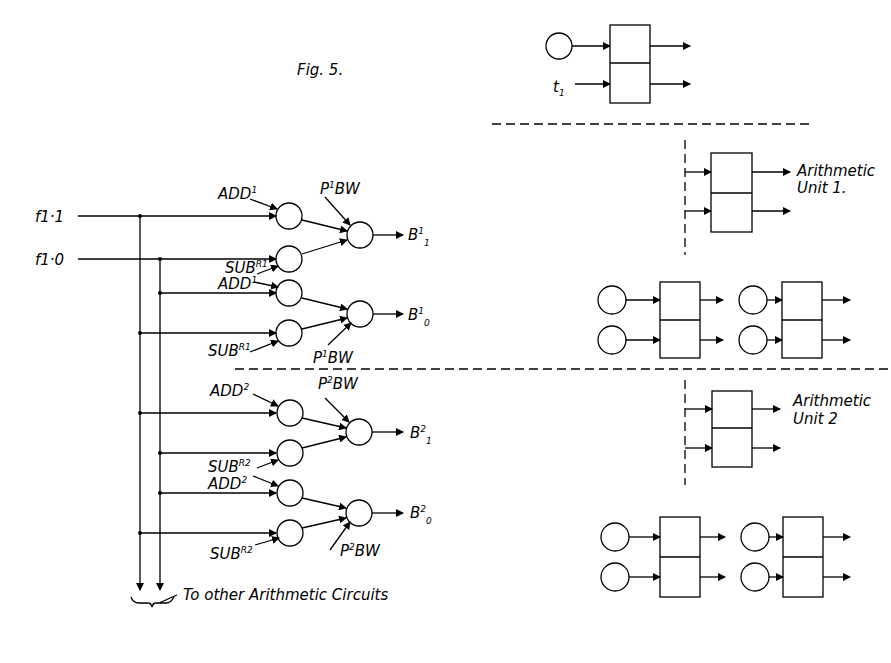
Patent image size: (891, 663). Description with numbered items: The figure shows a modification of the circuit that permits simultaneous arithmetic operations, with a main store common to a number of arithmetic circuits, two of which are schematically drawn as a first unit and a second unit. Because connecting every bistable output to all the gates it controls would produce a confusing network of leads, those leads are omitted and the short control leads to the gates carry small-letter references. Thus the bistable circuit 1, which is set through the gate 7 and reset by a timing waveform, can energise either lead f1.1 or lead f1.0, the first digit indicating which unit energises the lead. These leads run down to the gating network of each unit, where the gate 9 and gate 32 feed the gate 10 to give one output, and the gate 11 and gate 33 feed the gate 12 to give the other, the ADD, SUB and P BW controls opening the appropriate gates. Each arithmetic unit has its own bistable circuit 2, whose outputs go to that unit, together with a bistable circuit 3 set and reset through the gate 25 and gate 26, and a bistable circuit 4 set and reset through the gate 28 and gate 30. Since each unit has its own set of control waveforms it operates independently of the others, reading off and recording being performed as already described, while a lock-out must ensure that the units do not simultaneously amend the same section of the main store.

The gate G7 7 is at (539, 46).
The bistable circuit F1 1 is at (641, 62).
The bistable circuit F2 2 is at (731, 300).
The bistable circuit F3 3 is at (680, 429).
The bistable circuit F4 4 is at (802, 427).
The gate G9 9 is at (285, 304).
The gate G10 10 is at (368, 324).
The gate G11 11 is at (311, 389).
The gate G12 12 is at (368, 405).
The gate G25 25 is at (617, 407).
The gate G26 26 is at (591, 458).
The gate G28 28 is at (757, 405).
The gate G30 30 is at (751, 470).
The gate G32 32 is at (311, 358).
The gate G33 33 is at (273, 426).